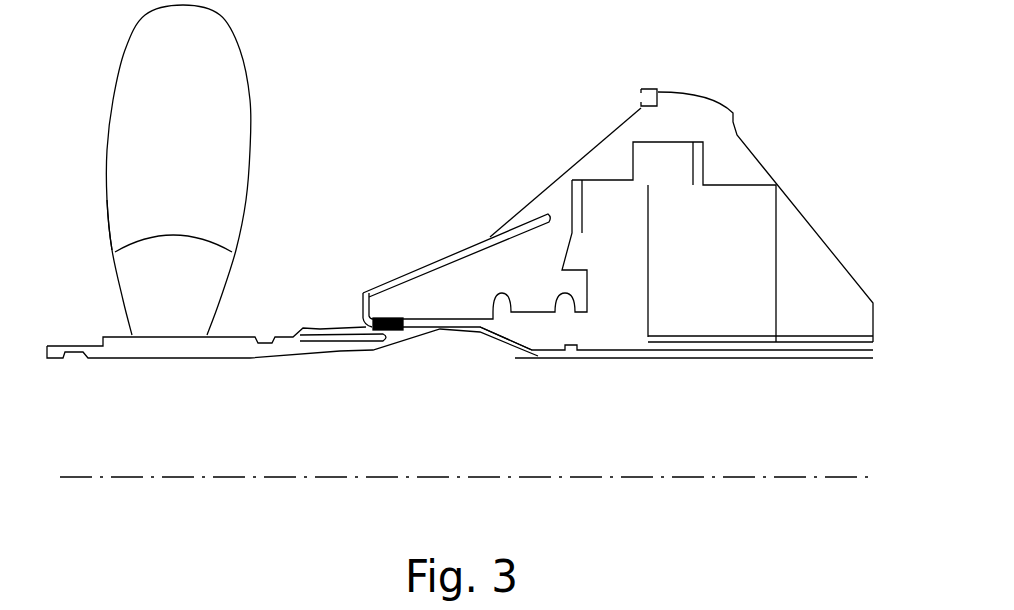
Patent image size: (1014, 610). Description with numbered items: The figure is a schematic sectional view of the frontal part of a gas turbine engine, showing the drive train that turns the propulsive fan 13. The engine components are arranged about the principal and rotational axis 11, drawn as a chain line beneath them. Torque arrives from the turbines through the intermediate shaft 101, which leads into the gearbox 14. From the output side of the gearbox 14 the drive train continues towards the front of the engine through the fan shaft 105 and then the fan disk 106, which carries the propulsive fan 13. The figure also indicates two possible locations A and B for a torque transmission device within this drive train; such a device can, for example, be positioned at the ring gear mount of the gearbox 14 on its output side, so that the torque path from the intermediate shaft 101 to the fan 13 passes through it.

The propulsive fan 13 is at (240, 90).
The fan disk 106 is at (135, 282).
The fan shaft 105 is at (172, 352).
The principal and rotational axis 11 is at (83, 478).
The possible location for the torque transmission device A is at (577, 212).
The possible location for the torque transmission device B is at (687, 162).
The gearbox 14 is at (765, 200).
The intermediate shaft 101 is at (833, 335).